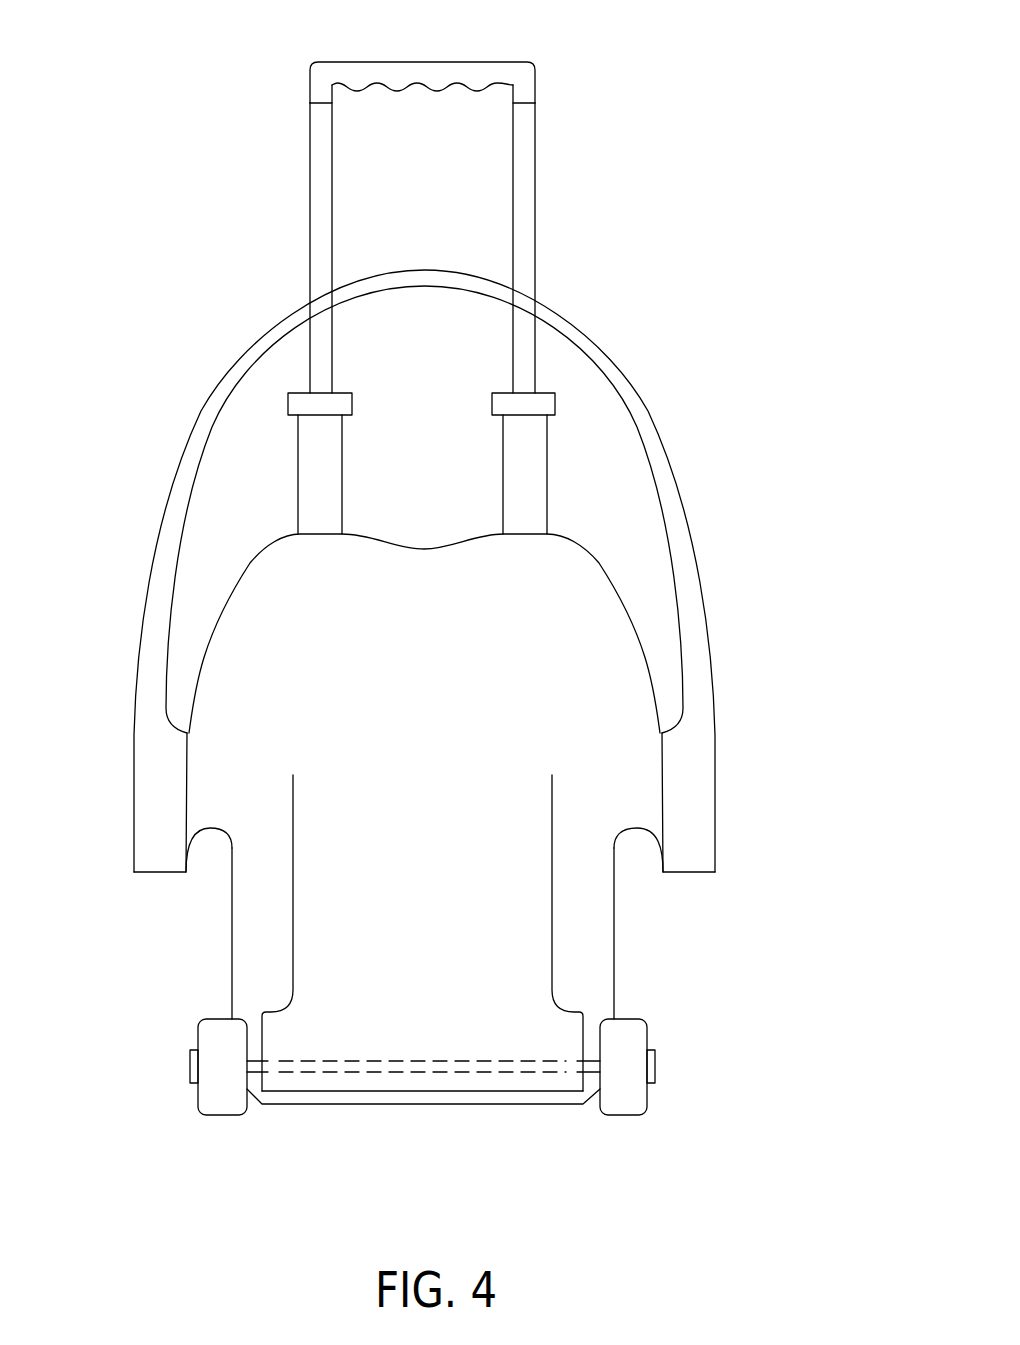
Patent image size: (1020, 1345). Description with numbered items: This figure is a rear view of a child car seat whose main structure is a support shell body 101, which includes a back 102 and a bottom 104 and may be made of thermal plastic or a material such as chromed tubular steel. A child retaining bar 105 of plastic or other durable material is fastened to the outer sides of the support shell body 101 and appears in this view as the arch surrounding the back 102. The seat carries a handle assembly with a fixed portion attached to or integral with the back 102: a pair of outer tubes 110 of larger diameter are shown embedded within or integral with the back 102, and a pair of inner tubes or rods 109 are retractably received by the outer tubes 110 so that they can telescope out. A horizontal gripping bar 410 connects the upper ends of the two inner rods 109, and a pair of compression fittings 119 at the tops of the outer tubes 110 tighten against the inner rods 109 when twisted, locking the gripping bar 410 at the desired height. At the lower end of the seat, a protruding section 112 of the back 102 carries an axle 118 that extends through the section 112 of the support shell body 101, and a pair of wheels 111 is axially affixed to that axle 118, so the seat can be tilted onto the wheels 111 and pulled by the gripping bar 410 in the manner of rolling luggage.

The horizontal gripping bar 410 is at (482, 62).
The inner tubes or rods 109 is at (513, 210).
The compression fittings 119 is at (492, 403).
The outer tubes 110 is at (503, 488).
The back 102 is at (445, 676).
The child retaining bar 105 is at (158, 522).
The protruding section 112 is at (293, 885).
The support shell body 101 is at (614, 958).
The bottom 104 is at (512, 1106).
The axle 118 is at (452, 1060).
The wheels 111 is at (200, 1022).